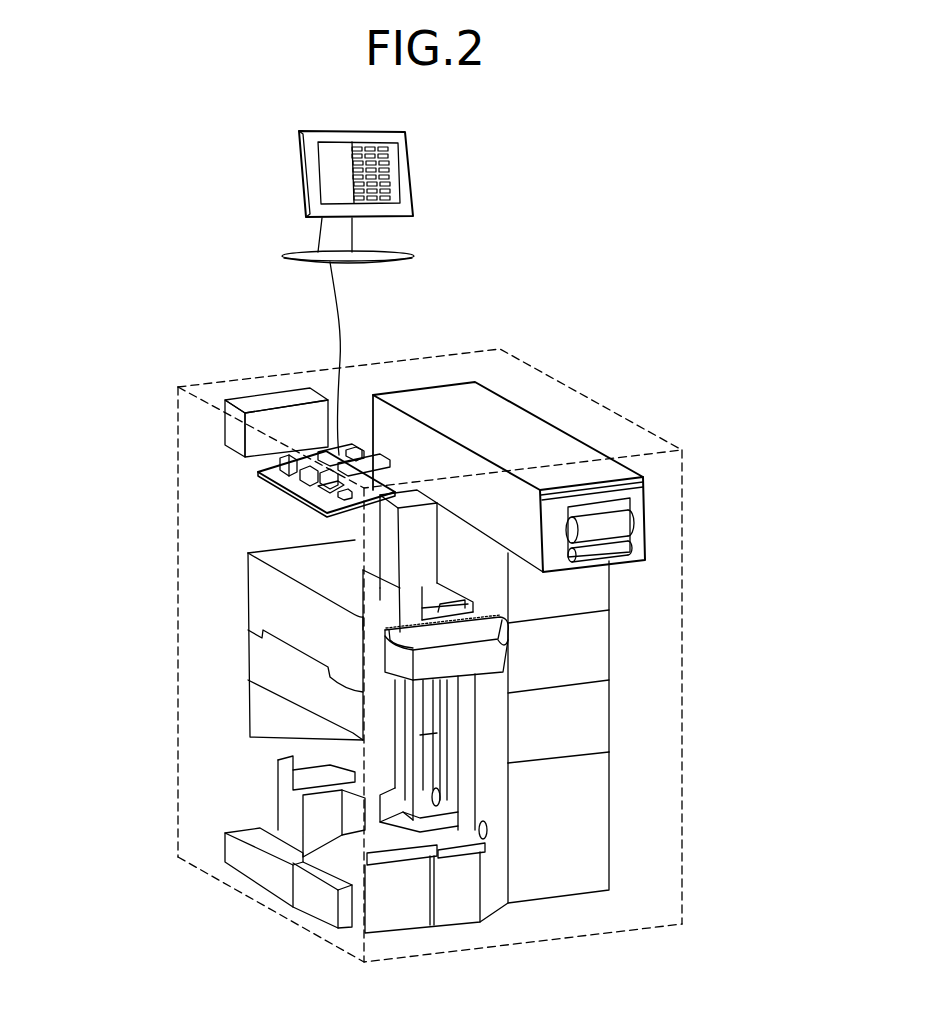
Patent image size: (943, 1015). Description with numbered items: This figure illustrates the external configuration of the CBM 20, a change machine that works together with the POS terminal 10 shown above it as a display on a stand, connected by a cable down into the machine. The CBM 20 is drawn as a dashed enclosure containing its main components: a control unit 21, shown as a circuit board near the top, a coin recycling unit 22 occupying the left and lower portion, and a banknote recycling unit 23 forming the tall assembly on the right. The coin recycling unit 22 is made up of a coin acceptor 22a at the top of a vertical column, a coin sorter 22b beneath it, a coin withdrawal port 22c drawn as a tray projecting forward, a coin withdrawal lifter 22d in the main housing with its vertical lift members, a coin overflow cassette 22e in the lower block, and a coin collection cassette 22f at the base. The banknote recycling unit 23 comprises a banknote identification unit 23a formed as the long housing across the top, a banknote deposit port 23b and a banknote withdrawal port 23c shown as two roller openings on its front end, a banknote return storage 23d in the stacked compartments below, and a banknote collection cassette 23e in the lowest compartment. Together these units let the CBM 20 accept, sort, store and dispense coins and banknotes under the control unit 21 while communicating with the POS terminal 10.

The POS terminal 10 is at (393, 190).
The CBM 20 is at (557, 381).
The control unit 21 is at (258, 470).
The coin recycling unit 22 is at (98, 503).
The coin acceptor 22a is at (392, 532).
The coin sorter 22b is at (392, 597).
The coin withdrawal port 22c is at (407, 662).
The coin withdrawal lifter 22d is at (468, 760).
The coin overflow cassette 22e is at (315, 815).
The coin collection cassette 22f is at (447, 878).
The banknote recycling unit 23 is at (745, 412).
The banknote identification unit 23a is at (568, 457).
The banknote deposit port 23b is at (612, 507).
The banknote withdrawal port 23c is at (613, 533).
The banknote return storage 23d is at (568, 590).
The banknote collection cassette 23e is at (575, 782).